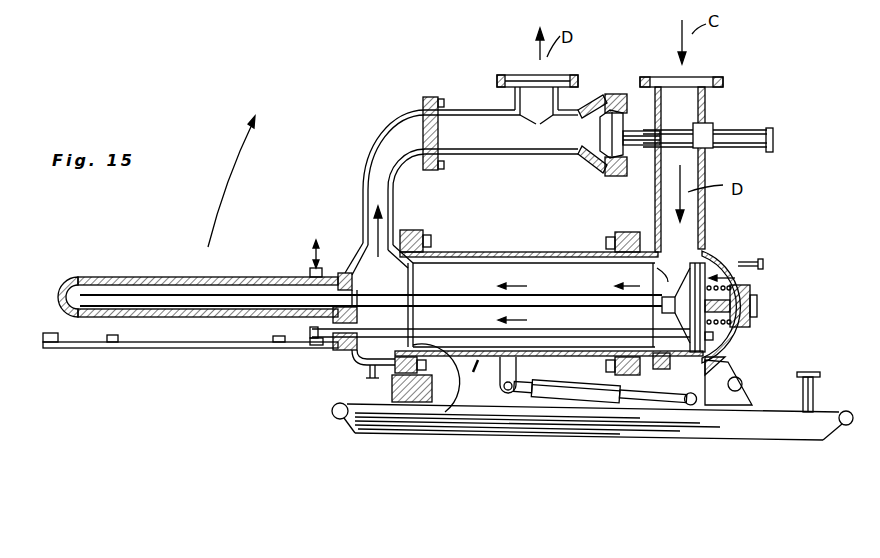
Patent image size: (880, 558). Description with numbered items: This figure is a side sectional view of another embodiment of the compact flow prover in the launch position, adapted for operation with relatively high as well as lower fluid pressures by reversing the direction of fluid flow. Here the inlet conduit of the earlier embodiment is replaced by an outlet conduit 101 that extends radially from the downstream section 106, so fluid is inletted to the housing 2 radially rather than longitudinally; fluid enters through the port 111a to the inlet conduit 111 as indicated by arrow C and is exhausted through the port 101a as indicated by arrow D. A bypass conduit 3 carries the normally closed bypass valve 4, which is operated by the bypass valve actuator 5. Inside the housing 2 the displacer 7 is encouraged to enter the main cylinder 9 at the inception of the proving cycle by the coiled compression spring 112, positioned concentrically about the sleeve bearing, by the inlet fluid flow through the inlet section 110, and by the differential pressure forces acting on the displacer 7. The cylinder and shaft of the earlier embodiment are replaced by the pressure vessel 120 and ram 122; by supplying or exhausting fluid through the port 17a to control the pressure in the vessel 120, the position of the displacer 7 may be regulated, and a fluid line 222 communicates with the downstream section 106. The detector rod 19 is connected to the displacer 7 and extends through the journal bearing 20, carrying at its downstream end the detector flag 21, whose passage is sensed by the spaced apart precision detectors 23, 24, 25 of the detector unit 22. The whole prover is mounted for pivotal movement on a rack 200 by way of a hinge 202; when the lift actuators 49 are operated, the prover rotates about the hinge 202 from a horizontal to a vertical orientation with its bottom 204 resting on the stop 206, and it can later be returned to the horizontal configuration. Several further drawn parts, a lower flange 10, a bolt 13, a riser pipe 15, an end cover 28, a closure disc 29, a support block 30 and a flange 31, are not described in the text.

The housing 2 is at (473, 372).
The bypass conduit 3 is at (596, 98).
The bypass valve 4 is at (597, 158).
The bypass valve actuator 5 is at (753, 130).
The displacer 7 is at (735, 278).
The main cylinder 9 is at (583, 353).
The support 10 is at (707, 357).
The bolt 13 is at (757, 306).
The riser pipe 15 is at (343, 272).
The port 17a is at (312, 274).
The detector rod 19 is at (557, 342).
The journal bearing 20 is at (347, 353).
The detector flag 21 is at (315, 348).
The detector unit 22 is at (172, 348).
The precision detector 23 is at (49, 349).
The precision detector 24 is at (112, 348).
The precision detector 25 is at (275, 352).
The end cover 28 is at (728, 257).
The closure disc 29 is at (707, 262).
The support block 30 is at (445, 412).
The flange 31 is at (662, 369).
The lift actuator 49 is at (615, 395).
The outlet conduit 101 is at (372, 138).
The port 101a is at (500, 75).
The downstream section 106 is at (395, 277).
The inlet section 110 is at (675, 258).
The inlet conduit 111 is at (708, 228).
The port 111a is at (703, 80).
The coiled spring 112 is at (723, 325).
The pressure vessel 120 is at (112, 278).
The ram 122 is at (450, 297).
The rack 200 is at (578, 430).
The hinge 202 is at (737, 392).
The bottom 204 is at (763, 265).
The stop 206 is at (806, 412).
The fluid line 222 is at (368, 374).